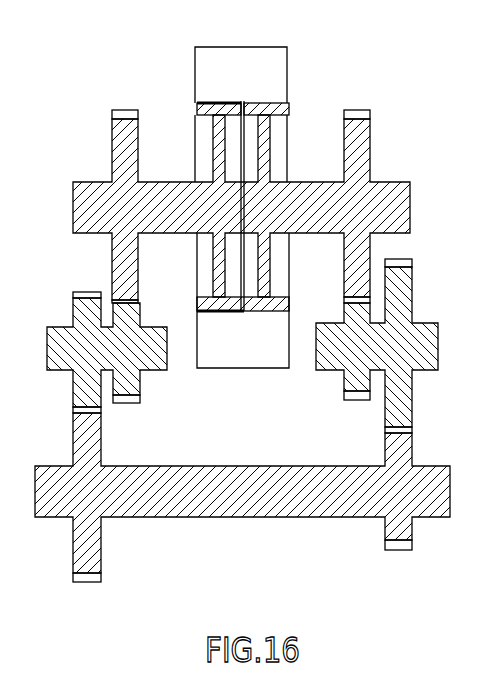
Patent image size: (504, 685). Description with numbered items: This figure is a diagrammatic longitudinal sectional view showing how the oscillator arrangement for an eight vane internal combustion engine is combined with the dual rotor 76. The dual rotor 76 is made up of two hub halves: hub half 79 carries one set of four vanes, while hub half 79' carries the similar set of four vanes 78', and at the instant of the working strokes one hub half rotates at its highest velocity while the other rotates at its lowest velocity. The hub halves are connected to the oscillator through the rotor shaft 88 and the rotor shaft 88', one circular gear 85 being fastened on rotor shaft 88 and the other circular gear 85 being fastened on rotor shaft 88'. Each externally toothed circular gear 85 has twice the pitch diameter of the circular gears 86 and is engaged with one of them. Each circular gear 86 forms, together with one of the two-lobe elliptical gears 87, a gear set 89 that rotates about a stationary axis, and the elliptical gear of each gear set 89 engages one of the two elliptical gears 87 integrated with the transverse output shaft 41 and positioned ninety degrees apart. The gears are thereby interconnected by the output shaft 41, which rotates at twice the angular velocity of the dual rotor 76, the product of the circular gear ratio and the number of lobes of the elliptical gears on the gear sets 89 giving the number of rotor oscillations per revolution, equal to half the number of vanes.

The dual rotor 76 is at (246, 209).
The vanes 78' is at (264, 227).
The hub half 79' is at (264, 202).
The hub half 79 is at (202, 202).
The circular gears 85 is at (112, 128).
The rotor shaft 88 is at (241, 207).
The rotor shaft 88' is at (325, 190).
The two-lobe elliptical gears 87 is at (73, 302).
The circular gears 86 is at (140, 389).
The gear sets 89 is at (56, 380).
The output shaft 41 is at (265, 517).